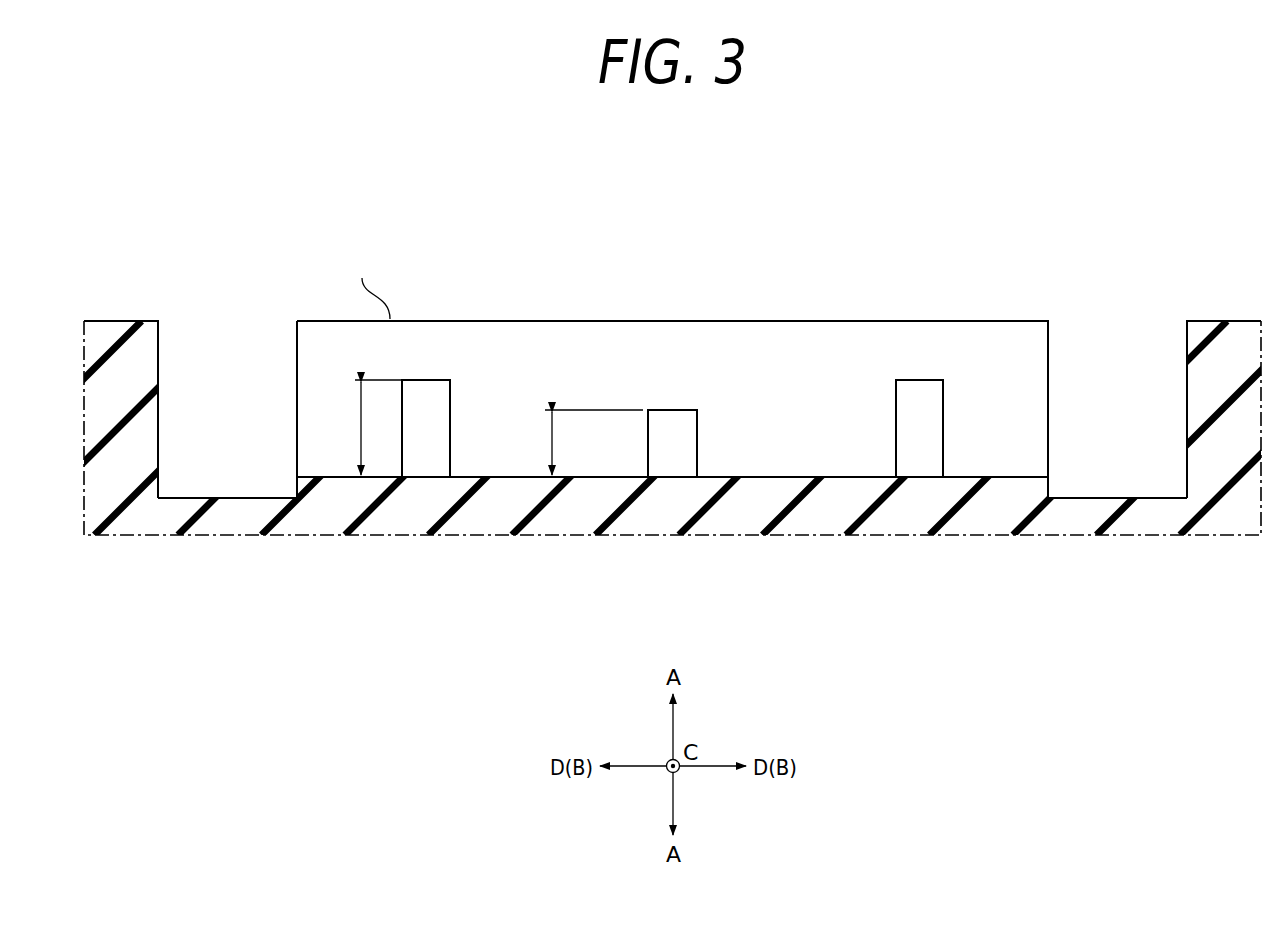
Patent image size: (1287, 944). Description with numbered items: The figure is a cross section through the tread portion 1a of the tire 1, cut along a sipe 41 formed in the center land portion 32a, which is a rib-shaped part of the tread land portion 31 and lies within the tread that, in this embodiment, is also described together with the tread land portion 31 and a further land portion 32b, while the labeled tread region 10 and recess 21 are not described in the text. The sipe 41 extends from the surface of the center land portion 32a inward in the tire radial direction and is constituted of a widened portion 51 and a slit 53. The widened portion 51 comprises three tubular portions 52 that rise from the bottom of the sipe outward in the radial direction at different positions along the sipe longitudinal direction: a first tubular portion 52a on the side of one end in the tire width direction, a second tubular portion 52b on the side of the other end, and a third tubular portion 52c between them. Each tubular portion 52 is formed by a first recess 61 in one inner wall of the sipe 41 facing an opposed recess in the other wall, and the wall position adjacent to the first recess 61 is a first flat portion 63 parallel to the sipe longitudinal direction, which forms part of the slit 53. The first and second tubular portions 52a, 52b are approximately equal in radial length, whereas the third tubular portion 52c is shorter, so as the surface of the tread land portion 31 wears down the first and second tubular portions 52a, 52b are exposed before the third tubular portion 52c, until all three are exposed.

The tread portion 1a is at (643, 372).
The tire 1 is at (643, 372).
The base member 10 is at (643, 378).
The recess 21 is at (228, 332).
The tread land portion 31 is at (668, 360).
The center land portion 32a is at (970, 299).
The second wall portion 32b is at (123, 311).
The sipe 41 is at (695, 415).
The widened portion 51 is at (690, 496).
The tubular portions 52 is at (690, 496).
The first tubular portion 52a is at (427, 466).
The second tubular portion 52b is at (922, 464).
The third tubular portion 52c is at (676, 467).
The slit 53 is at (1017, 340).
The first recess 61 is at (690, 496).
The first flat portion 63 is at (607, 443).